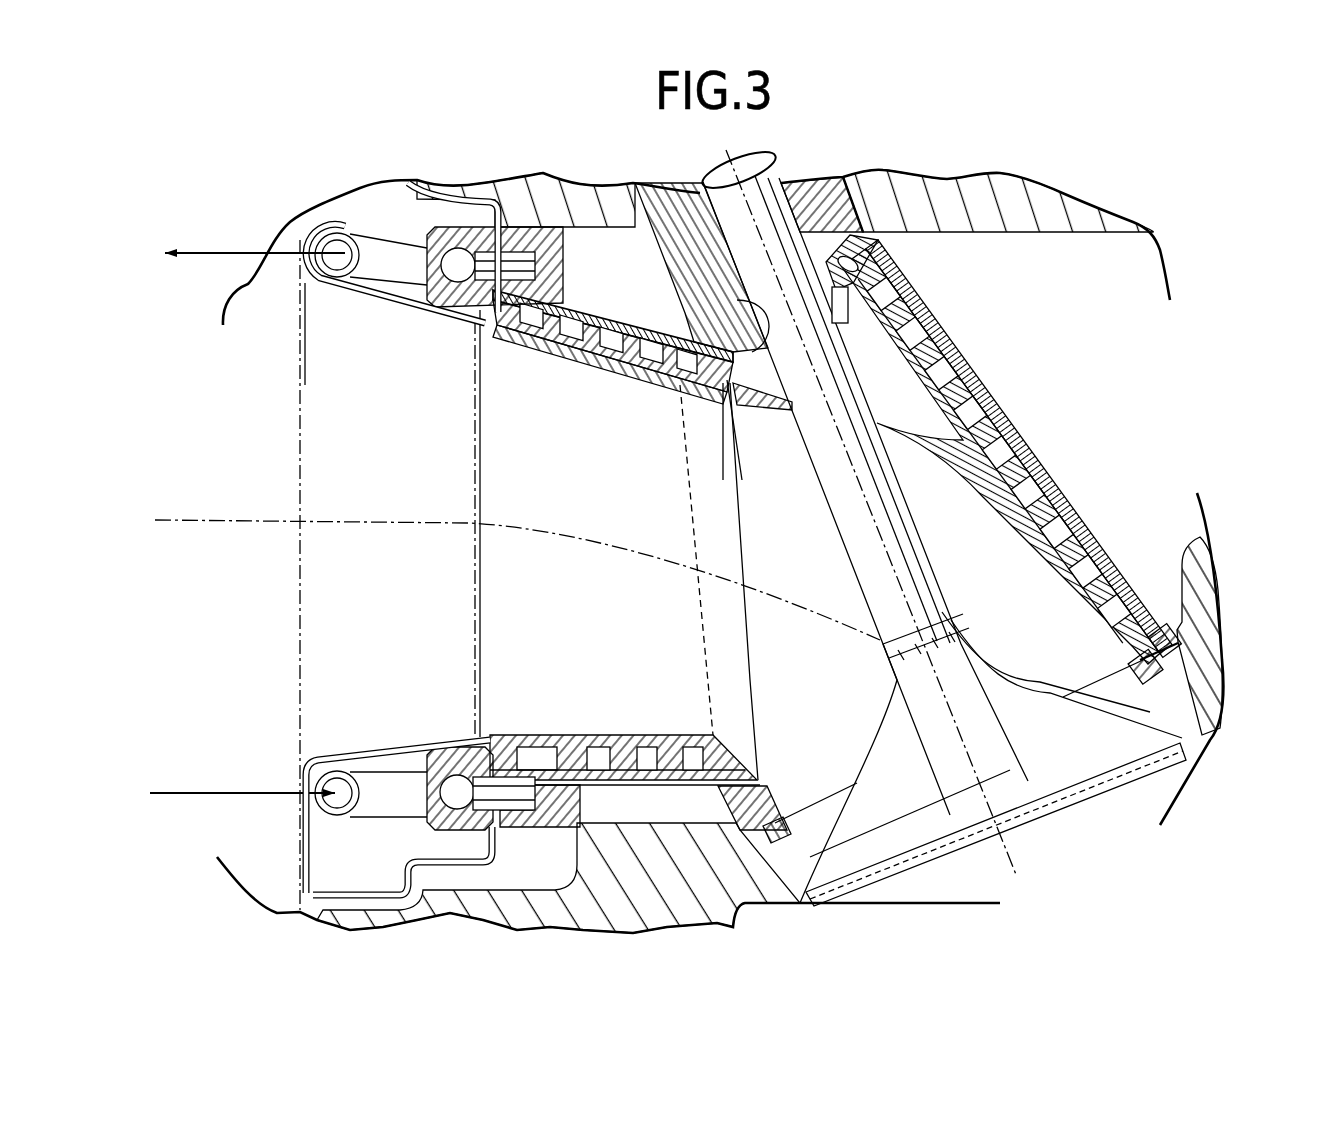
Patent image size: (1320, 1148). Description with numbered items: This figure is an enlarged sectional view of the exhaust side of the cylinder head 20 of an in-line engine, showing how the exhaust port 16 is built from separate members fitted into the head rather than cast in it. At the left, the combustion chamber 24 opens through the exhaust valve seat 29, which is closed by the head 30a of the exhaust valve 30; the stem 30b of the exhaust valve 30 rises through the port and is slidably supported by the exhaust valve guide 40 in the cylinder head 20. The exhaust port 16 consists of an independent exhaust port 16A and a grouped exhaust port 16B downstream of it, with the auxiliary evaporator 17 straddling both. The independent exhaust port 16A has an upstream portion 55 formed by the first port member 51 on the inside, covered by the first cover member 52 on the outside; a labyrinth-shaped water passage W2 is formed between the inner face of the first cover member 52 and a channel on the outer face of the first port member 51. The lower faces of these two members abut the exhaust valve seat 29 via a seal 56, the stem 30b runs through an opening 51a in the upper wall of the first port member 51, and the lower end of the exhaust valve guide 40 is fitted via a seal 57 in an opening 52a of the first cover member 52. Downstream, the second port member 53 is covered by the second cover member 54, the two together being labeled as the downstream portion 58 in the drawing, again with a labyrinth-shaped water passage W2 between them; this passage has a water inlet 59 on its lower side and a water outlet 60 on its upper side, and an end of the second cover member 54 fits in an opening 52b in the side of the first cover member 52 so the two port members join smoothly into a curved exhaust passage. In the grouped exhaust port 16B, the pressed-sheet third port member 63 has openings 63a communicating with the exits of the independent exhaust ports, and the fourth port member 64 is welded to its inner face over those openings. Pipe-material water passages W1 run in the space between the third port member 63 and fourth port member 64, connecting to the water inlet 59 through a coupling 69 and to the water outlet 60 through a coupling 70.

The water passage W1 is at (360, 230).
The labyrinth-shaped water passage W2 is at (610, 333).
The exhaust port 16 is at (352, 405).
The independent exhaust port 16A is at (560, 353).
The grouped exhaust port 16B is at (400, 315).
The auxiliary evaporator 17 is at (987, 367).
The cylinder head 20 is at (1210, 698).
The combustion chamber 24 is at (1059, 897).
The exhaust valve seat 29 is at (1160, 732).
The exhaust valve 30 is at (852, 570).
The head of exhaust valve 30a is at (1027, 798).
The stem of exhaust valve 30b is at (910, 543).
The exhaust valve guide 40 is at (667, 257).
The first port member 51 is at (1050, 490).
The opening 51a is at (772, 393).
The first cover member 52 is at (1037, 447).
The opening 52a is at (760, 303).
The opening 52b is at (680, 377).
The second port member 53 is at (640, 758).
The second cover member 54 is at (598, 758).
The upstream portion 55 is at (1140, 385).
The seal 56 is at (785, 815).
The seal 57 is at (860, 270).
The lower seal plate 58 is at (637, 638).
The water inlet 59 is at (523, 790).
The water outlet 60 is at (523, 267).
The third port member 63 is at (430, 193).
The opening 63a is at (483, 320).
The fourth port member 64 is at (363, 295).
The coupling 69 is at (440, 757).
The coupling 70 is at (482, 312).